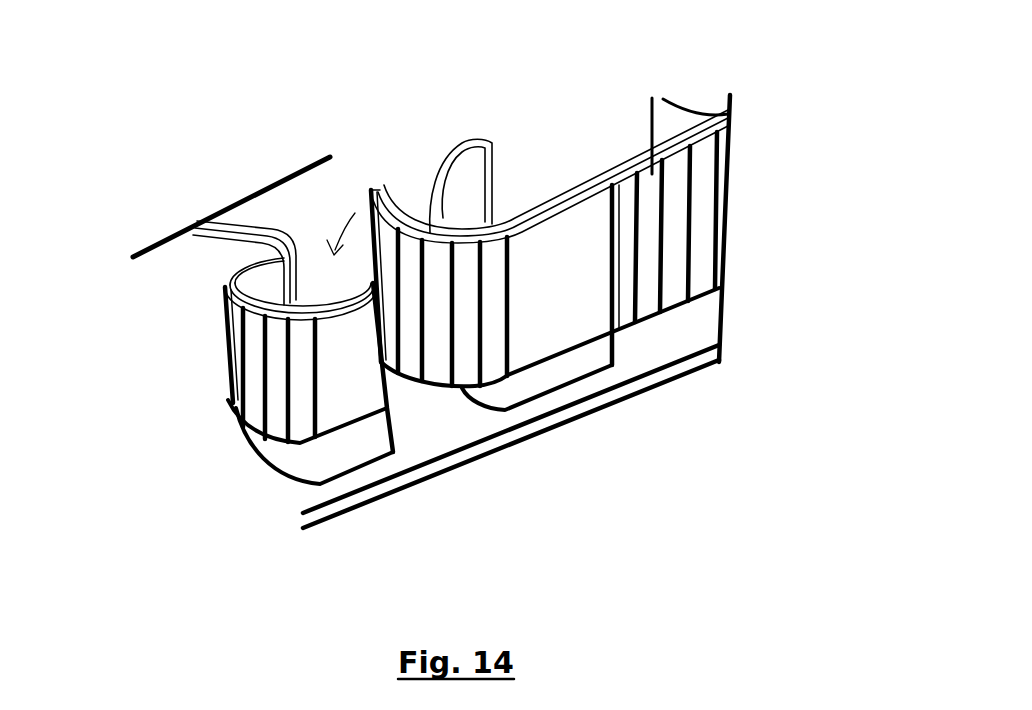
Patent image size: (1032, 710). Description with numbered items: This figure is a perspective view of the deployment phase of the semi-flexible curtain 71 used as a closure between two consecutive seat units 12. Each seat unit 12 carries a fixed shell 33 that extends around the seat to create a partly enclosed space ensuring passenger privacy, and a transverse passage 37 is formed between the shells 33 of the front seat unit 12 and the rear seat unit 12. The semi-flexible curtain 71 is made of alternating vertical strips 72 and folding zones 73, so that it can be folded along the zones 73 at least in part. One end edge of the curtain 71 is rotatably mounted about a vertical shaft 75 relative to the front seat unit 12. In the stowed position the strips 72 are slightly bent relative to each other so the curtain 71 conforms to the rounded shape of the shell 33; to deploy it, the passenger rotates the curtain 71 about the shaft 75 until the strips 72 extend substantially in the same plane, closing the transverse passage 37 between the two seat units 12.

The seat unit 12 is at (313, 185).
The fixed shell 33 is at (453, 153).
The vertical shaft 75 is at (520, 218).
The semi-flexible curtain 71 is at (419, 247).
The vertical strips 72 is at (290, 425).
The folding zones 73 is at (267, 397).
The transverse passage 37 is at (448, 427).